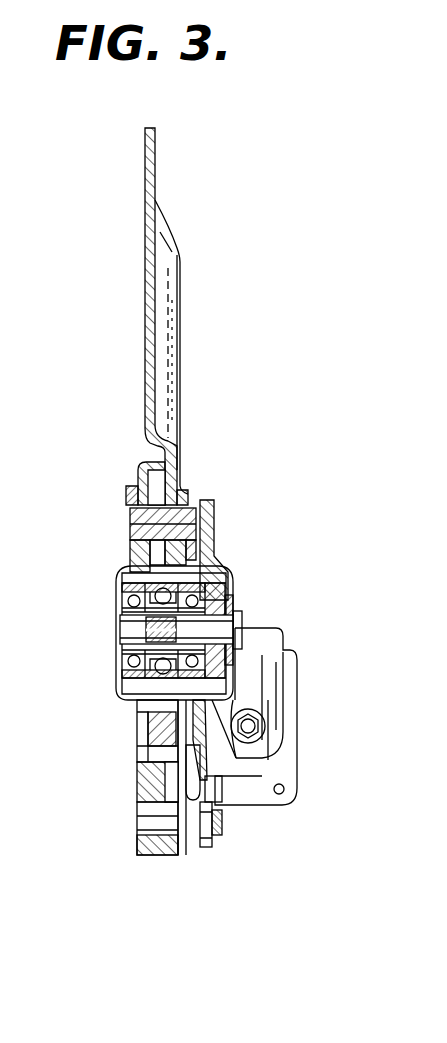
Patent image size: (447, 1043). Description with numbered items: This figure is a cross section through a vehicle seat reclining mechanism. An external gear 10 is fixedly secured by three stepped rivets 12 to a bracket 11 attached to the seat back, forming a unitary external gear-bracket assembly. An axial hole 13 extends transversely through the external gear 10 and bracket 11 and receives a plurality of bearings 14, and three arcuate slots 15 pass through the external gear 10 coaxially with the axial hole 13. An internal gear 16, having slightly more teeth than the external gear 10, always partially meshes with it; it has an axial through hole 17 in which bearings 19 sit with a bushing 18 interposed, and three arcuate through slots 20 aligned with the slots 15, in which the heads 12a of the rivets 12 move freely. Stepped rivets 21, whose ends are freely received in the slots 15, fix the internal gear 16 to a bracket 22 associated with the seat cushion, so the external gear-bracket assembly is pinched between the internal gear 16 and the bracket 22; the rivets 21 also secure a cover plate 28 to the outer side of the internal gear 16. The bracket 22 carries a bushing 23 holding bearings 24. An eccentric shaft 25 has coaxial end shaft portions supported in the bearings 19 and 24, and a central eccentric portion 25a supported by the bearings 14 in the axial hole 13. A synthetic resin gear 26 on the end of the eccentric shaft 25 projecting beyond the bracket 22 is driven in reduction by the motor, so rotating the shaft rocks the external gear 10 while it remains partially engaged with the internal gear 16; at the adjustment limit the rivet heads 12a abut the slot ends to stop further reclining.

The external gear 10 is at (210, 552).
The bracket 11 is at (147, 312).
The stepped rivets 12 is at (140, 754).
The rivet heads 12a is at (140, 777).
The axial hole 13 is at (222, 574).
The bearings 14 is at (227, 600).
The arcuate slots 15 is at (194, 496).
The internal gear 16 is at (140, 492).
The axial through hole 17 is at (122, 585).
The bushing 18 is at (124, 684).
The bearings 19 is at (122, 612).
The arcuate through slots 20 is at (140, 736).
The stepped rivets 21 is at (132, 524).
The bracket 22 is at (218, 815).
The bushing 23 is at (266, 708).
The bearings 24 is at (278, 672).
The eccentric shaft 25 is at (242, 632).
The eccentric portion 25a is at (128, 638).
The synthetic resin gear 26 is at (290, 768).
The cover plate 28 is at (128, 562).